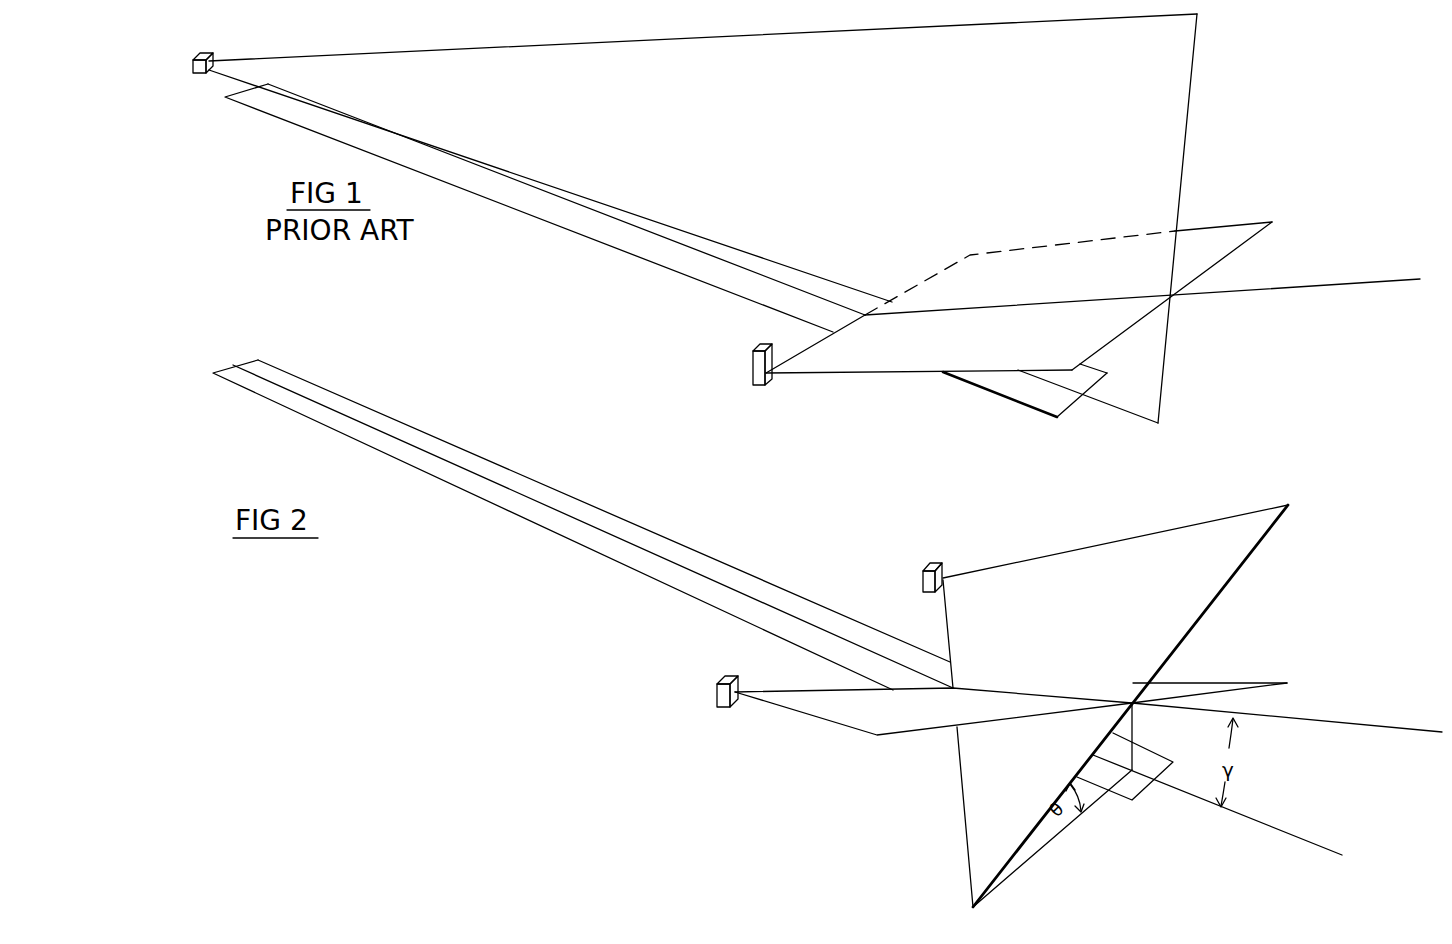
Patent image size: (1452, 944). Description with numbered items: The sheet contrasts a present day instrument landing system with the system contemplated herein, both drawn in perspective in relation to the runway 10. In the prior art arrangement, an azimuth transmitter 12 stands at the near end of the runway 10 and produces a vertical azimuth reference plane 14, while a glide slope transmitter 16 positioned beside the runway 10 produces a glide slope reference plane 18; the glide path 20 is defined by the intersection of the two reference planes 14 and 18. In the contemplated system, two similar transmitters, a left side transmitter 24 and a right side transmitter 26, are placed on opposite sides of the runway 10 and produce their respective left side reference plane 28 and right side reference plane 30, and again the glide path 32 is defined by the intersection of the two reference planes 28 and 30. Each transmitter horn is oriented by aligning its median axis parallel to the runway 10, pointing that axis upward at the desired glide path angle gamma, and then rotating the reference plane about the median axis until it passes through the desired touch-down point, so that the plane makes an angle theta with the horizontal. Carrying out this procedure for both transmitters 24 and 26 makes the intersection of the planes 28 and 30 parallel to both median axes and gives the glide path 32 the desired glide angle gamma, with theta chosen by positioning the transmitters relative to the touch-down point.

In FIG. 1, the runway 10 is at (704, 228).
In FIG. 2, the runway 10 is at (654, 531).
In FIG. 1, the azimuth transmitter 12 is at (202, 48).
In FIG. 1, the azimuth reference plane 14 is at (1193, 70).
In FIG. 1, the glide slope transmitter 16 is at (760, 345).
In FIG. 1, the glide slope reference plane 18 is at (1247, 222).
In FIG. 1, the glide path 20 is at (1257, 292).
In FIG. 2, the left side transmitter 24 is at (738, 675).
In FIG. 2, the right side transmitter 26 is at (946, 561).
In FIG. 2, the left side reference plane 28 is at (907, 735).
In FIG. 2, the right side reference plane 30 is at (1226, 587).
In FIG. 2, the glide path 32 is at (1312, 718).